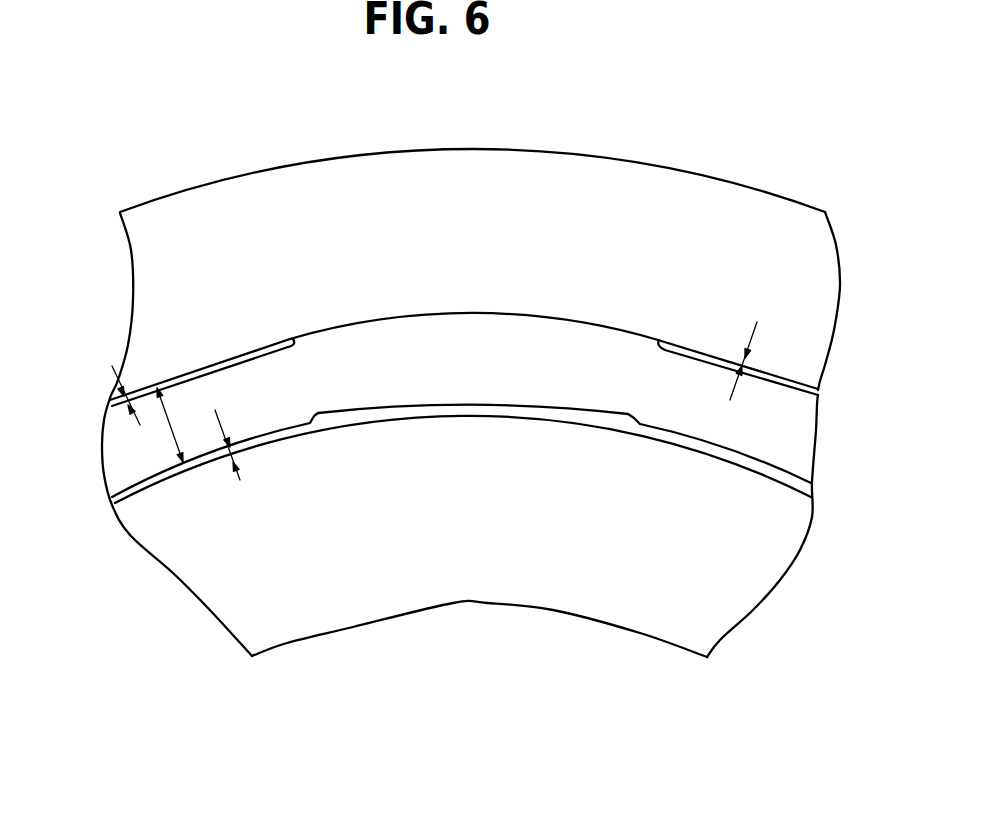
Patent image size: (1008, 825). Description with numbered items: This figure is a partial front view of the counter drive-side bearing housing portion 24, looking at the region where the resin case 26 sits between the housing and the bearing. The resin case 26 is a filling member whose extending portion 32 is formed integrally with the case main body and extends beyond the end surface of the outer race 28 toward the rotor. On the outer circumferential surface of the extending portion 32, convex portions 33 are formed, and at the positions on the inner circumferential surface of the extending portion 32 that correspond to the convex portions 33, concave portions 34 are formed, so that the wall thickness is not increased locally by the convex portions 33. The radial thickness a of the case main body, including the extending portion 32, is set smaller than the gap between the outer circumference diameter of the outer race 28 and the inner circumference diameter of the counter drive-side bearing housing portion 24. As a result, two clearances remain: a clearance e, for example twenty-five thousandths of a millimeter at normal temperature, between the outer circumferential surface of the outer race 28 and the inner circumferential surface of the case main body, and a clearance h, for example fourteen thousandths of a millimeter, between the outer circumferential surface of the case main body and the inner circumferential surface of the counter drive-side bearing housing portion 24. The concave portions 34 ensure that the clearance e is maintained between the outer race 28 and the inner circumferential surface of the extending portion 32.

The counter drive-side bearing housing portion 24 is at (435, 183).
The convex portions 33 is at (555, 330).
The extending portion 32 is at (122, 443).
The resin case 26 is at (129, 470).
The concave portions 34 is at (605, 413).
The outer race 28 is at (662, 503).
The clearance h is at (124, 393).
The radial thickness a is at (170, 417).
The clearance e is at (233, 458).